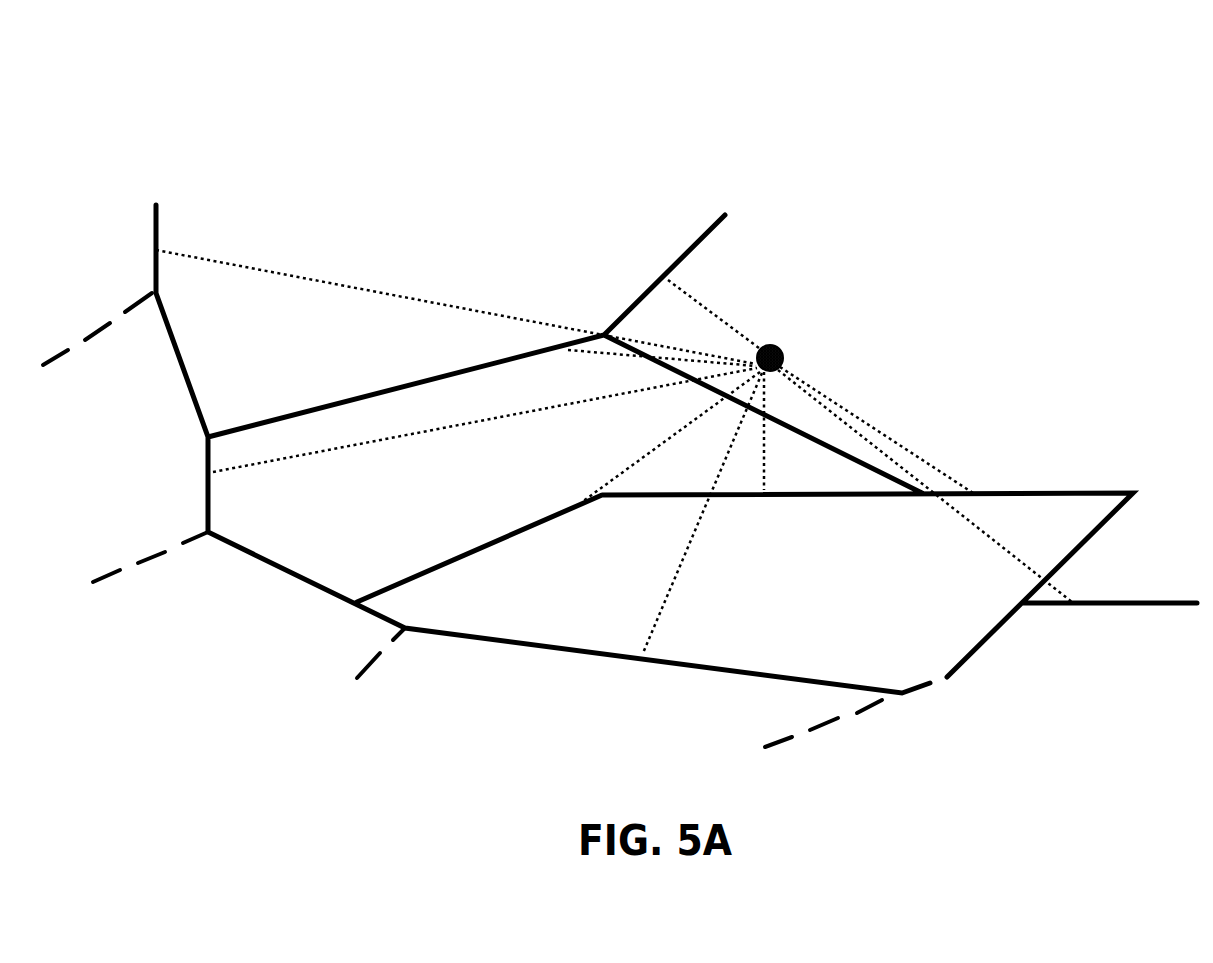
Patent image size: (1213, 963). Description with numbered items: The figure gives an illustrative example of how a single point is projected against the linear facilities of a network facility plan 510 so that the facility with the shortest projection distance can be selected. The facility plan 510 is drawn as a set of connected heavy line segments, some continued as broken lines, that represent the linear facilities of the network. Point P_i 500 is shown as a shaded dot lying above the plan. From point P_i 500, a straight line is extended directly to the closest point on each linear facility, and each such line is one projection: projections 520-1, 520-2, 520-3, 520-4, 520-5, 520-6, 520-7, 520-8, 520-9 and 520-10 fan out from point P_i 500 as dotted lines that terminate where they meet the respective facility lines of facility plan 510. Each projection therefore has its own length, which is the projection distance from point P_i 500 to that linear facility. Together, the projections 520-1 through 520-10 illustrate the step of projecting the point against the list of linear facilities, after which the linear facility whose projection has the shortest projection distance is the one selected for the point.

The facility plan 510 is at (262, 110).
The point P_i 500 is at (889, 209).
The projection 520-1 is at (405, 271).
The projection 520-2 is at (738, 310).
The projection 520-3 is at (906, 418).
The projection 520-4 is at (936, 522).
The projection 520-5 is at (788, 478).
The projection 520-6 is at (724, 418).
The projection 520-7 is at (614, 453).
The projection 520-8 is at (575, 366).
The projection 520-9 is at (489, 443).
The line segment 520-10 is at (706, 565).